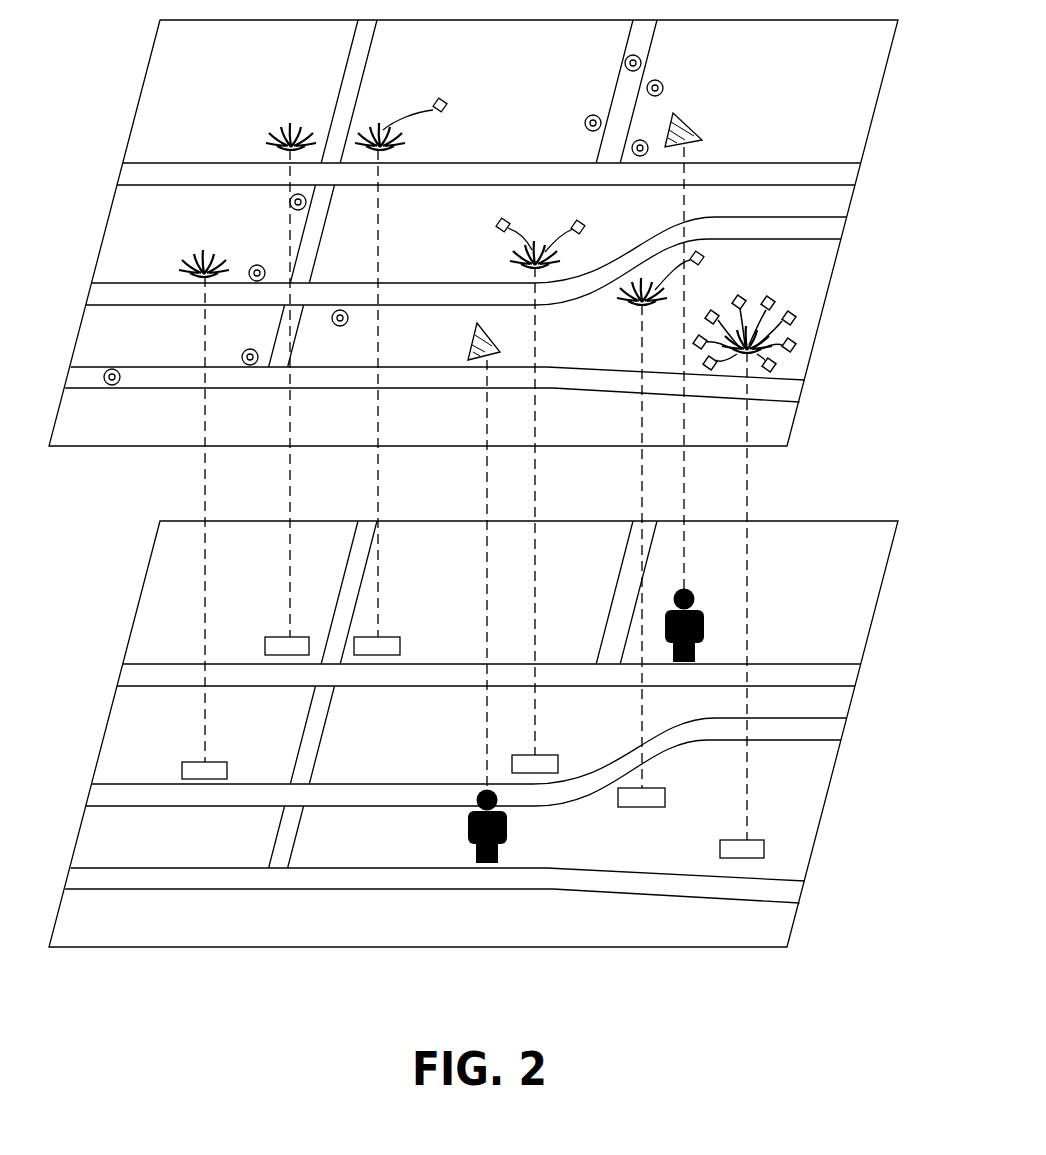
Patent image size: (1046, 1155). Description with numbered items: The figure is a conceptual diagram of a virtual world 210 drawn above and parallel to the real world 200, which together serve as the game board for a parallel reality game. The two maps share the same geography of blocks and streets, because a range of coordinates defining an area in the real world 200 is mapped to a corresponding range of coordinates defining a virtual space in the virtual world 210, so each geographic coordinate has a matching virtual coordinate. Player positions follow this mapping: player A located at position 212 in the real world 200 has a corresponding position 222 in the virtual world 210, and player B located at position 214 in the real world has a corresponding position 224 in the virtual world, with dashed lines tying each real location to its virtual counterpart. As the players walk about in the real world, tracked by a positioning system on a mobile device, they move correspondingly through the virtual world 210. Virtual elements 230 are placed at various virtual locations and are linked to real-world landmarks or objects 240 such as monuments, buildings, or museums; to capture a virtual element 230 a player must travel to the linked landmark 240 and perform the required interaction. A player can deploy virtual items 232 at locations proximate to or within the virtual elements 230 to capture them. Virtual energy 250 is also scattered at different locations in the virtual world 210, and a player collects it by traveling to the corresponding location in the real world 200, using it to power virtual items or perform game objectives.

The real world 200 is at (876, 607).
The virtual world 210 is at (867, 140).
The position of player A 212 is at (468, 832).
The position of player B 214 is at (702, 617).
The corresponding position of player A 222 is at (495, 348).
The corresponding position of player B 224 is at (700, 140).
The virtual element 230 is at (291, 125).
The virtual item 232 is at (446, 103).
The real-world landmark or object 240 is at (286, 637).
The virtual energy 250 is at (664, 88).